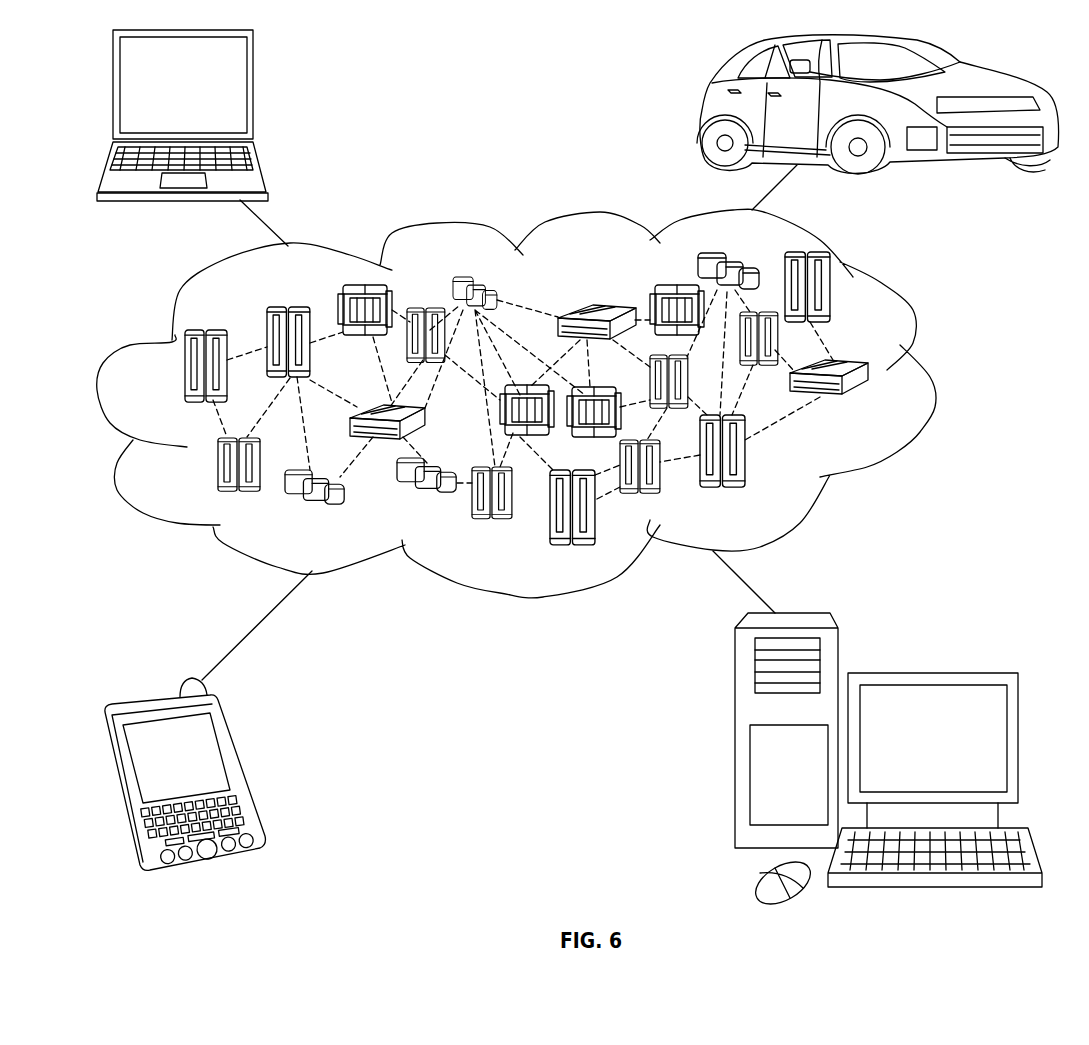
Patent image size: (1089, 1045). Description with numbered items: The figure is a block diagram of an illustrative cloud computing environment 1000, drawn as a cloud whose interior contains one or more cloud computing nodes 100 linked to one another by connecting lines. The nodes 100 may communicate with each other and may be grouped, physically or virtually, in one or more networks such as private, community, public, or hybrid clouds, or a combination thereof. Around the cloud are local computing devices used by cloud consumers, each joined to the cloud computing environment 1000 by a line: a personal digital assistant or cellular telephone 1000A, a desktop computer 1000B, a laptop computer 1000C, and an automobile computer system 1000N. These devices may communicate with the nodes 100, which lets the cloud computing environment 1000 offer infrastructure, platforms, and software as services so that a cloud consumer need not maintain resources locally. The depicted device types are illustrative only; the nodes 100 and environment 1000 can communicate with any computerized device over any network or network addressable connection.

The cloud computing environment 1000 is at (927, 378).
The cloud computing nodes 100 is at (886, 408).
The personal digital assistant (PDA) or cellular telephone 1000A is at (243, 770).
The desktop computer 1000B is at (929, 673).
The laptop computer 1000C is at (257, 93).
The automobile computer system 1000N is at (703, 108).